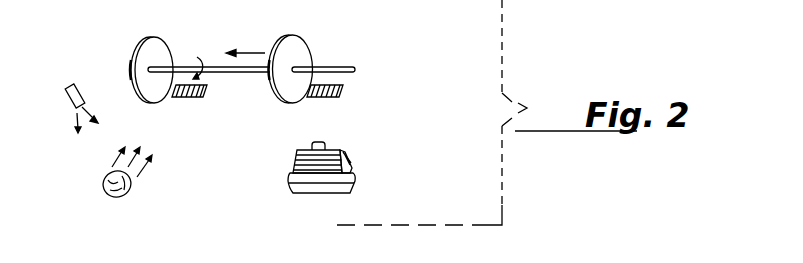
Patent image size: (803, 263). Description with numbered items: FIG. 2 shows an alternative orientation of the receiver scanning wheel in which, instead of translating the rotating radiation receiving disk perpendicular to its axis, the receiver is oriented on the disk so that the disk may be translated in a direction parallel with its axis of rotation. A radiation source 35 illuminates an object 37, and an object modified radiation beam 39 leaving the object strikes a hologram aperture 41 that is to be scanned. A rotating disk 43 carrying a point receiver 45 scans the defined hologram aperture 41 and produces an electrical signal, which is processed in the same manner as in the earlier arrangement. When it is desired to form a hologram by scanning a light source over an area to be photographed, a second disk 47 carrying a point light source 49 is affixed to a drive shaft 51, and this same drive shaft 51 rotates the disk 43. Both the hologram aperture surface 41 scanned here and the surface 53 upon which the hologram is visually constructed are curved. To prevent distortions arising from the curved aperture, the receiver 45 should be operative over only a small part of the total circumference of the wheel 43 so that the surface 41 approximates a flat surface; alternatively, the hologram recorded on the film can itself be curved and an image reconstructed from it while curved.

The radiation source 35 is at (72, 83).
The object 37 is at (104, 186).
The object modified radiation beam 39 is at (137, 173).
The hologram aperture 41 is at (201, 99).
The rotating disk 43 is at (157, 51).
The point receiver 45 is at (130, 72).
The disk 47 is at (297, 50).
The point light source 49 is at (268, 79).
The drive shaft 51 is at (343, 65).
The surface 53 is at (345, 89).